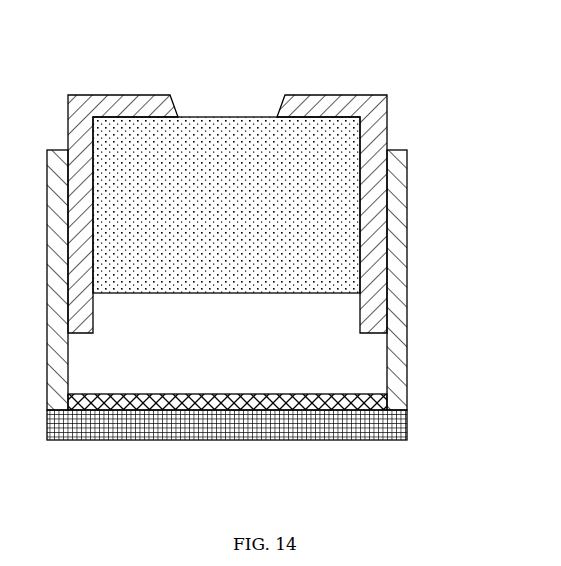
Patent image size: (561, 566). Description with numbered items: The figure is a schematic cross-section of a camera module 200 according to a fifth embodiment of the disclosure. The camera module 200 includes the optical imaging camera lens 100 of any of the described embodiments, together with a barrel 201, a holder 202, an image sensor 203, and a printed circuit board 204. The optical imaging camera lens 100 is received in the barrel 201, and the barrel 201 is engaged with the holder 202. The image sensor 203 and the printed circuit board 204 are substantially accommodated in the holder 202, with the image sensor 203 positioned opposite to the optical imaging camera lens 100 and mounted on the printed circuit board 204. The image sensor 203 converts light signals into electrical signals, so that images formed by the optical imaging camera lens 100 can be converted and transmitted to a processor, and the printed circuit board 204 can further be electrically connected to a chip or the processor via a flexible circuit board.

The camera module 200 is at (100, 71).
The optical imaging camera lens 100 is at (231, 148).
The barrel 201 is at (388, 110).
The holder 202 is at (408, 238).
The image sensor 203 is at (272, 402).
The printed circuit board 204 is at (207, 441).